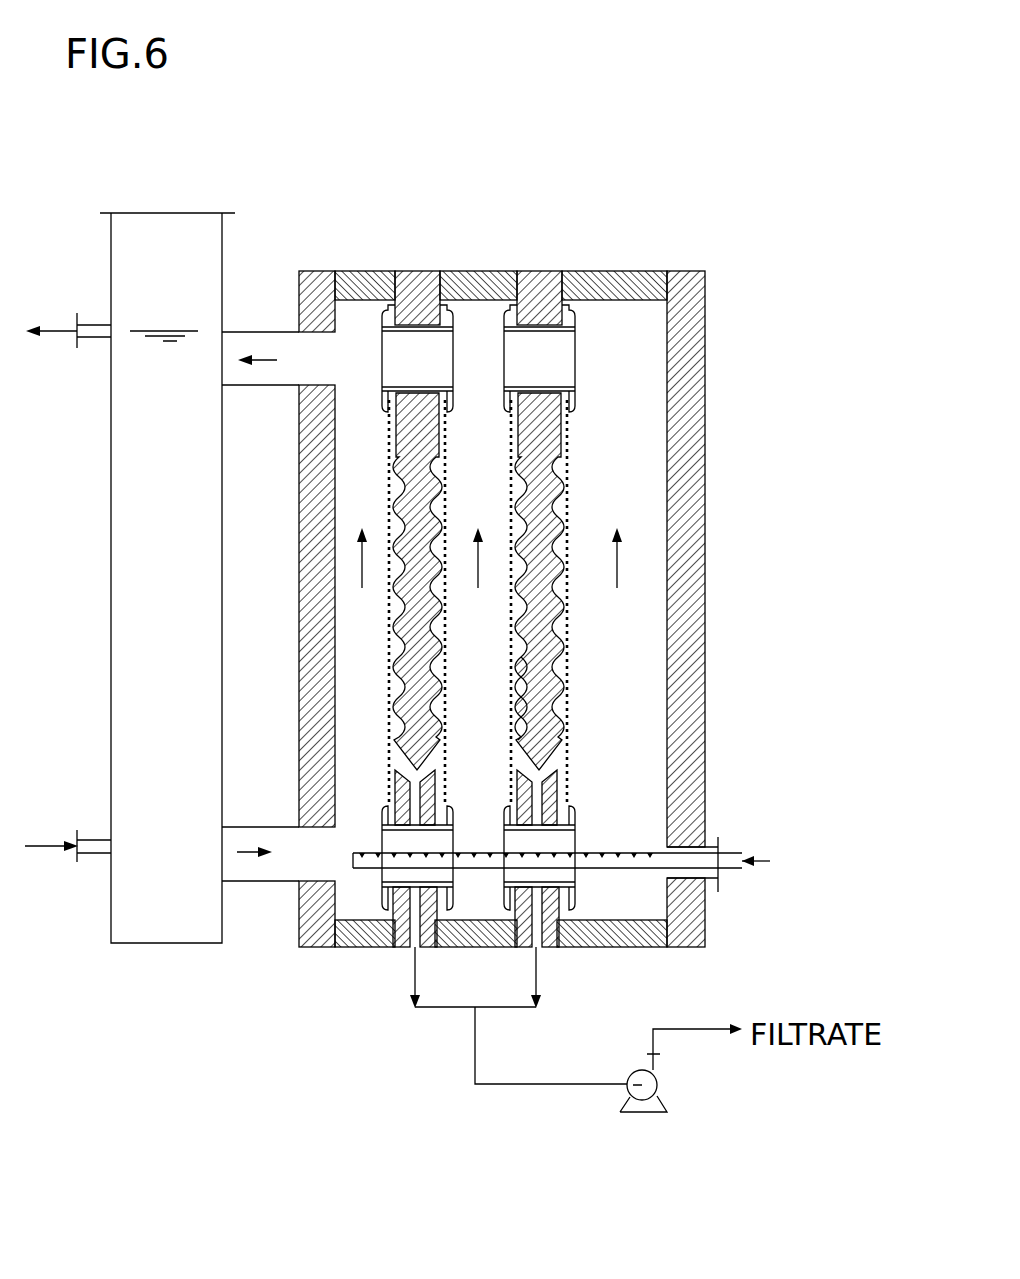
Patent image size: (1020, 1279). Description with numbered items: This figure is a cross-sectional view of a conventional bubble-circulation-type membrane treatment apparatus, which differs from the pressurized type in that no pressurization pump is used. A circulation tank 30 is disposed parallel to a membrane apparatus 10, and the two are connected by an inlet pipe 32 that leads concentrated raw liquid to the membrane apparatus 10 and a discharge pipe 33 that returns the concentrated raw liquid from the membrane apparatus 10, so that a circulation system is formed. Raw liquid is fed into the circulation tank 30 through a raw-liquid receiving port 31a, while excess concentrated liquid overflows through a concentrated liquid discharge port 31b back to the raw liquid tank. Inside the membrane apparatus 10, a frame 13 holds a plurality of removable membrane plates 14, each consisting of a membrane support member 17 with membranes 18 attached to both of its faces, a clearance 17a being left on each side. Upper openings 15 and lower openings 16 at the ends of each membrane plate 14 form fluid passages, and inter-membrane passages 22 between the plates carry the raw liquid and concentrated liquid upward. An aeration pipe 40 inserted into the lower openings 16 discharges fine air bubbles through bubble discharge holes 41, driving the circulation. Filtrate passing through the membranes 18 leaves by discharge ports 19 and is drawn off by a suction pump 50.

The membrane apparatus 10 is at (706, 232).
The frame 13 is at (706, 516).
The membrane plate 14 is at (420, 270).
The upper opening 15 is at (577, 362).
The lower opening 16 is at (576, 842).
The membrane support member 17 is at (567, 456).
The clearance 17a is at (563, 706).
The membrane 18 is at (567, 514).
The discharge port 19 is at (410, 943).
The inter-membrane passage 22 is at (390, 660).
The circulation tank 30 is at (110, 596).
The raw-liquid receiving port 31a is at (100, 852).
The concentrated liquid discharge port 31b is at (96, 326).
The inlet pipe 32 is at (262, 882).
The discharge pipe 33 is at (262, 390).
The aeration pipe 40 is at (614, 872).
The bubble discharge hole 41 is at (472, 850).
The suction pump 50 is at (656, 1091).